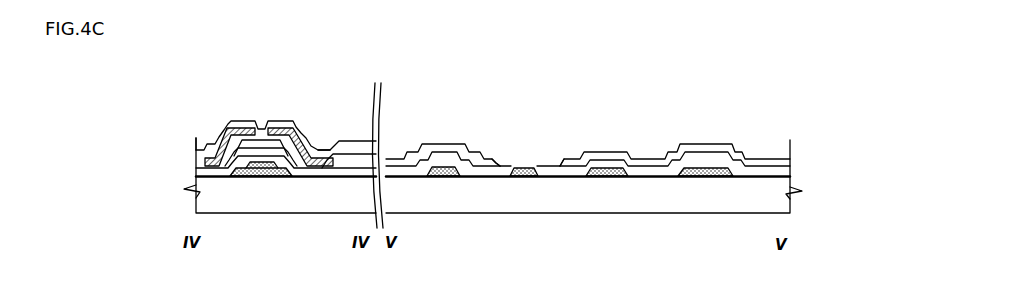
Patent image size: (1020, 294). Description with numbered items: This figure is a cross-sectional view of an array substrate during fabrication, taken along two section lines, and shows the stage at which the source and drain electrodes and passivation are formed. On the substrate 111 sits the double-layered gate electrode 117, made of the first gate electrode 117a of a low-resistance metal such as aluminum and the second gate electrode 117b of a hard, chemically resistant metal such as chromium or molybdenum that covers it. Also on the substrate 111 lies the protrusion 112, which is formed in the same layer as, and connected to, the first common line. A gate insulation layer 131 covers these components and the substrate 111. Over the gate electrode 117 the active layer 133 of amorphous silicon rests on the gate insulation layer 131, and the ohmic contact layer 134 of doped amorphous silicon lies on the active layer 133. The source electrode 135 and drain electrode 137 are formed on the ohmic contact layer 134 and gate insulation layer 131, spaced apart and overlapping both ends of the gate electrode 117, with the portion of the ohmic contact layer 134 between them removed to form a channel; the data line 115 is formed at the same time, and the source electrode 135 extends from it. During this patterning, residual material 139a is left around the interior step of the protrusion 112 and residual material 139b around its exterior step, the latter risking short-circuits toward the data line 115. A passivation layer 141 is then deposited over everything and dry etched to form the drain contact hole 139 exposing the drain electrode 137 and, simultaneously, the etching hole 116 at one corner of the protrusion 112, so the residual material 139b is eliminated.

The substrate 111 is at (540, 200).
The protrusion 112 is at (535, 165).
The data line 115 is at (196, 138).
The etching hole 116 is at (522, 162).
The gate electrode 117 is at (253, 220).
The first gate electrode 117a is at (275, 177).
The second gate electrode 117b is at (238, 177).
The gate insulation layer 131 is at (358, 138).
The active layer 133 is at (302, 138).
The ohmic contact layer 134 is at (297, 121).
The source electrode 135 is at (239, 123).
The drain electrode 137 is at (278, 121).
The drain contact hole 139 is at (327, 139).
The residual material 139a is at (490, 160).
The residual material 139b is at (557, 165).
The passivation layer 141 is at (250, 121).